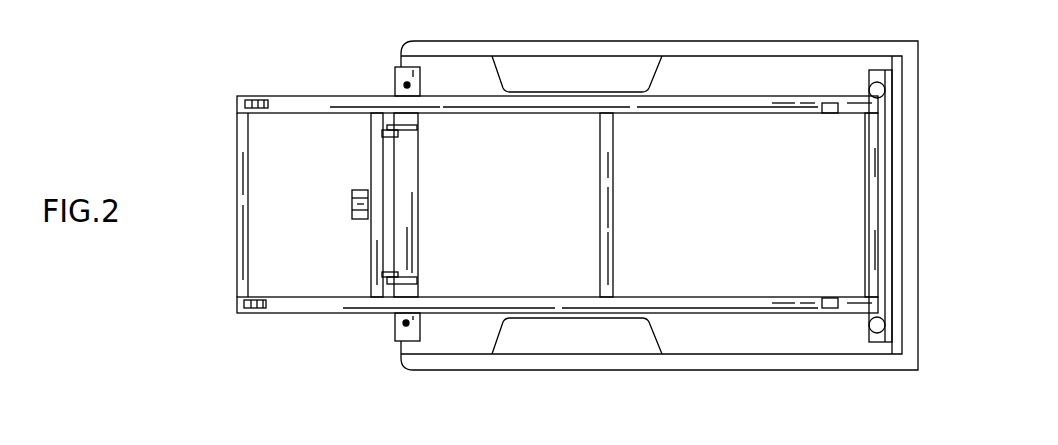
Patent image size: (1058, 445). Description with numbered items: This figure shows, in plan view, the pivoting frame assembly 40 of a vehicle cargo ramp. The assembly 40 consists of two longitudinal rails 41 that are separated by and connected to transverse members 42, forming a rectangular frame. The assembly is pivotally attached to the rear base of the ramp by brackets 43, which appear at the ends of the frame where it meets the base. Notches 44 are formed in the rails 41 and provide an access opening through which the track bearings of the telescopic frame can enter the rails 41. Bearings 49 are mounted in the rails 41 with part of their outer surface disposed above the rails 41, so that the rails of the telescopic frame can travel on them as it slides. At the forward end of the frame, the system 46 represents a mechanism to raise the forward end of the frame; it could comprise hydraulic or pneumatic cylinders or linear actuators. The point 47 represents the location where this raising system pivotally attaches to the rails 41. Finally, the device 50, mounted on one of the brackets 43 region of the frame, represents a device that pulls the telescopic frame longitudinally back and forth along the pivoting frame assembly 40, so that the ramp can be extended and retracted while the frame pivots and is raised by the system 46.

The pivoting frame assembly 40 is at (313, 313).
The longitudinal rails 41 is at (483, 115).
The transverse members 42 is at (615, 197).
The brackets 43 is at (393, 137).
The notches 44 is at (830, 115).
The system to raise the forward end of the frame 46 is at (872, 85).
The pivotal attachment point 47 is at (868, 317).
The bearings 49 is at (256, 98).
The device to pull a telescopic frame 50 is at (352, 210).